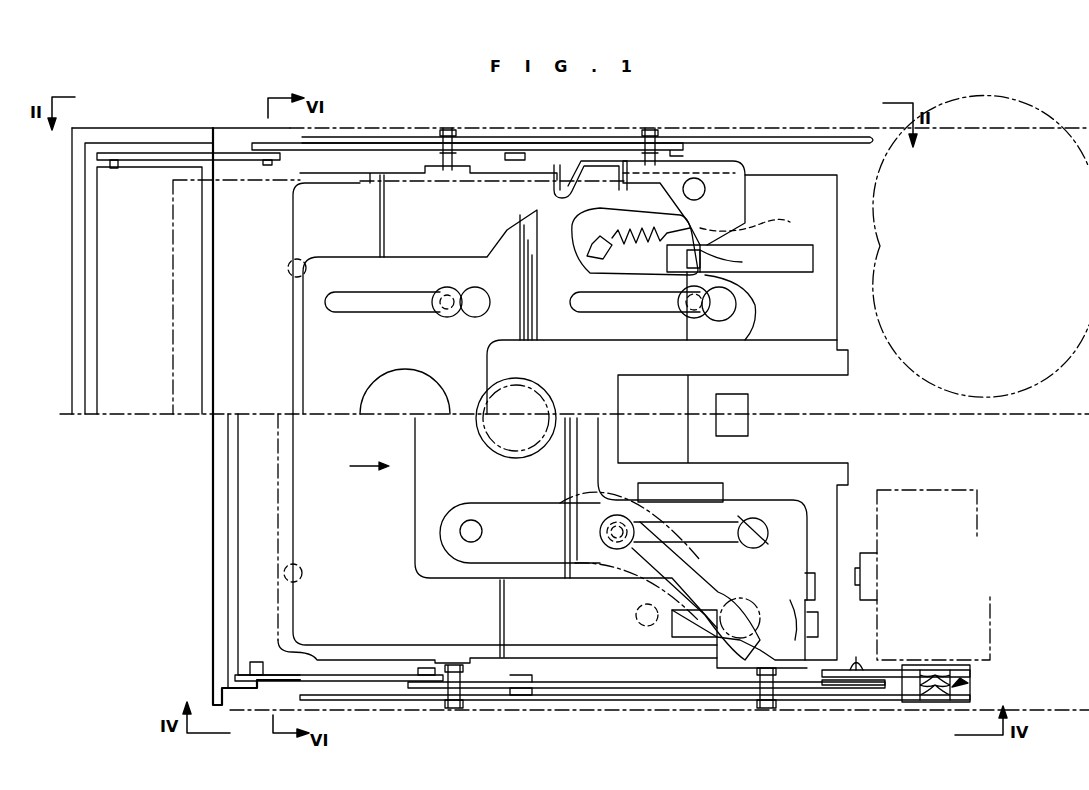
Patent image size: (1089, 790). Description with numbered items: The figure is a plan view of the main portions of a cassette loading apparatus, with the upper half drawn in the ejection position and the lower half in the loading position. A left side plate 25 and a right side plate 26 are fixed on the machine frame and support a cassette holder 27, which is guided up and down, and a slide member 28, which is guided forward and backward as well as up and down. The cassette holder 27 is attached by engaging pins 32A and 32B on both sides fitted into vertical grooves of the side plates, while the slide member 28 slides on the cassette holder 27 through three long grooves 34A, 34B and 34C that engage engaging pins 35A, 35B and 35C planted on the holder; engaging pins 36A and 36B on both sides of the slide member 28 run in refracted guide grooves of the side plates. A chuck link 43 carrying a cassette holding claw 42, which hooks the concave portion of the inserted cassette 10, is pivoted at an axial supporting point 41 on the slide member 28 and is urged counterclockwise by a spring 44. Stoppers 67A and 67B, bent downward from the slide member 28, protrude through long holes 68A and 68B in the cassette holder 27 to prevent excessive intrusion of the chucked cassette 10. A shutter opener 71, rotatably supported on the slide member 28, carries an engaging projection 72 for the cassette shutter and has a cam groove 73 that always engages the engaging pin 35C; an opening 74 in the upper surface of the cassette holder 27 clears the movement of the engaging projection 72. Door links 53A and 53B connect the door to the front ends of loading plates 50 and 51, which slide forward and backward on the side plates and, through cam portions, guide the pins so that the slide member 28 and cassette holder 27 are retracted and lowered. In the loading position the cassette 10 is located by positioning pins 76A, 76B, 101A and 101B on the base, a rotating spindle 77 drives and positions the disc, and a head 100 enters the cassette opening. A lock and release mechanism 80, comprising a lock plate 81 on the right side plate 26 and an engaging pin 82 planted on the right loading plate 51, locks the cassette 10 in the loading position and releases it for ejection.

The cassette 10 is at (173, 250).
The left side plate 25 is at (855, 143).
The right side plate 26 is at (547, 701).
The cassette holder 27 is at (290, 355).
The slide member 28 is at (416, 252).
The engaging pin 32A is at (447, 128).
The engaging pin 32B is at (455, 708).
The long groove 34A is at (606, 313).
The long groove 34B is at (354, 311).
The long groove 34C is at (742, 518).
The engaging pin 35A is at (697, 318).
The engaging pin 35B is at (448, 318).
The engaging pin 35C is at (600, 520).
The engaging pin 36A is at (650, 128).
The engaging pin 36B is at (766, 708).
The axial supporting point 41 is at (706, 189).
The cassette holding claw 42 is at (556, 188).
The chuck link 43 is at (574, 226).
The spring 44 is at (612, 254).
The loading plate 50 is at (355, 147).
The loading plate 51 is at (490, 689).
The door link 53A is at (240, 152).
The door link 53B is at (375, 682).
The stopper 67A is at (738, 316).
The stopper 67B is at (800, 632).
The long hole 68A is at (778, 272).
The long hole 68B is at (680, 638).
The shutter opener 71 is at (520, 503).
The engaging projection 72 is at (790, 662).
The cam groove 73 is at (640, 575).
The opening 74 is at (768, 518).
The positioning pin 76A is at (726, 203).
The positioning pin 76B is at (645, 628).
The rotating spindle 77 is at (480, 445).
The lock and release mechanism 80 is at (968, 683).
The lock plate 81 is at (895, 678).
The engaging pin 82 is at (855, 668).
The head 100 is at (748, 410).
The positioning pin 101A is at (288, 266).
The positioning pin 101B is at (303, 575).